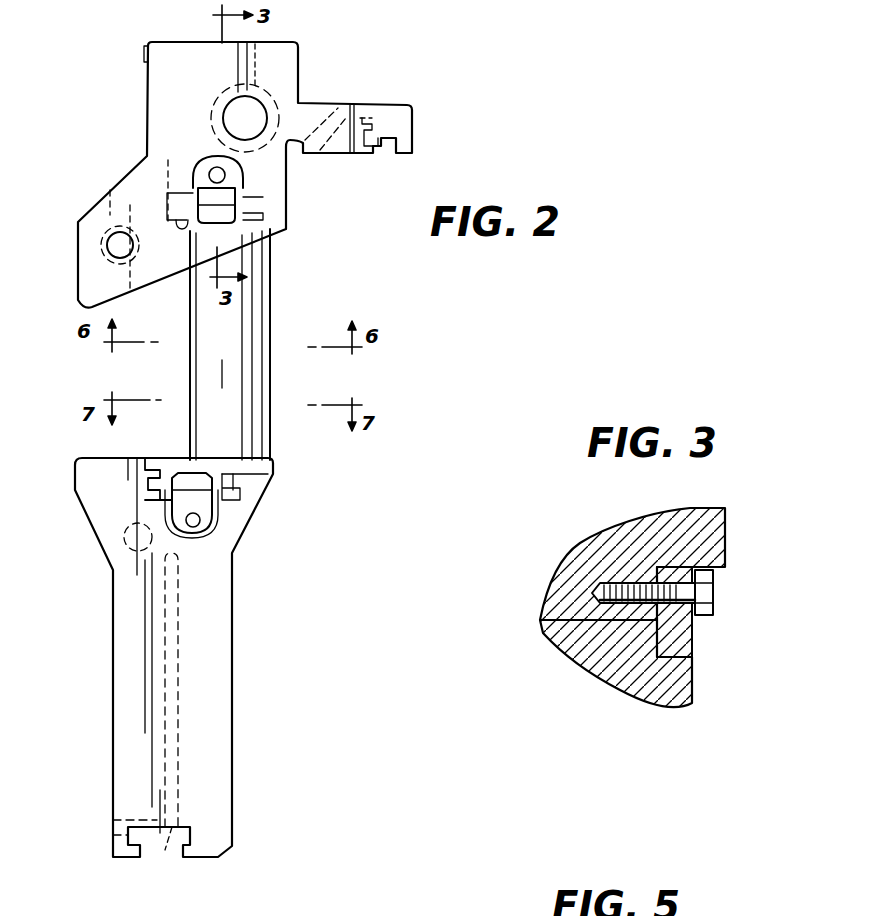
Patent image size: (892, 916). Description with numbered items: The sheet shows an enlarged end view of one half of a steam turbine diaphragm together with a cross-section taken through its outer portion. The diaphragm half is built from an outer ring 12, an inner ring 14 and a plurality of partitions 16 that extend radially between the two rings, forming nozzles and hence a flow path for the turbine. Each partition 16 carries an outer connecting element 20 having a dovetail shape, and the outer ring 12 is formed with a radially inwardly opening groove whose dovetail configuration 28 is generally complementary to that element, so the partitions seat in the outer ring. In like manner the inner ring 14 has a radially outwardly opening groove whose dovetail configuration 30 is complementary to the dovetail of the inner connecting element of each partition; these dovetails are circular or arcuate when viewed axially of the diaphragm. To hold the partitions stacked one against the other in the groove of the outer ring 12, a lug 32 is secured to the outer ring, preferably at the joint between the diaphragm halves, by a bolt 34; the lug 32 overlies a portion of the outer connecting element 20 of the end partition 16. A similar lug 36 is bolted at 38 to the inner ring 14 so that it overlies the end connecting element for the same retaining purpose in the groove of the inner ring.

In FIG. 2, the outer ring 12 is at (157, 116).
In FIG. 3, the outer ring 12 is at (578, 543).
In FIG. 2, the inner ring 14 is at (93, 500).
In FIG. 2, the partition 16 is at (281, 233).
In FIG. 3, the outer connecting element 20 is at (597, 668).
In FIG. 2, the dovetail configuration 28 is at (210, 180).
In FIG. 2, the dovetail configuration 30 is at (158, 462).
In FIG. 3, the lug 32 is at (692, 633).
In FIG. 3, the bolt 34 is at (717, 585).
In FIG. 2, the lug 36 is at (203, 500).
In FIG. 2, the bolt 38 is at (215, 527).